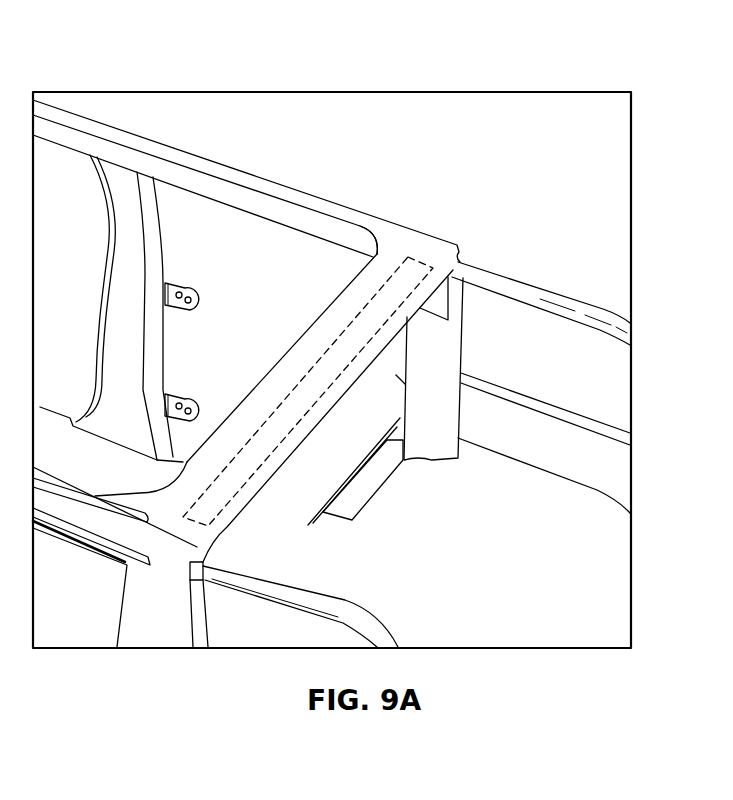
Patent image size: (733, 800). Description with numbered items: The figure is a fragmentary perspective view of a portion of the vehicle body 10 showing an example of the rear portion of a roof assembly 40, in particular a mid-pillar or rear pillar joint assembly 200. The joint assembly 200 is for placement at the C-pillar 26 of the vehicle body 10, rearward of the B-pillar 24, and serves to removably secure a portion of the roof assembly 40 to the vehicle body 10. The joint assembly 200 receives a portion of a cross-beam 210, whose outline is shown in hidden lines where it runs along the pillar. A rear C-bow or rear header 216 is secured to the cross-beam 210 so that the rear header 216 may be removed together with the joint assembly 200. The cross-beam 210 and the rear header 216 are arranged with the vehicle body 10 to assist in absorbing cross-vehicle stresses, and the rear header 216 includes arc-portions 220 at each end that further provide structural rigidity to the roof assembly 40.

The vehicle body 10 is at (592, 296).
The B-pillar 24 is at (138, 128).
The roof assembly 40 is at (250, 162).
The C-pillar 26 is at (409, 160).
The joint assembly 200 is at (421, 222).
The cross-beam 210 is at (317, 357).
The rear header 216 is at (265, 407).
The arc-portions 220 is at (352, 250).